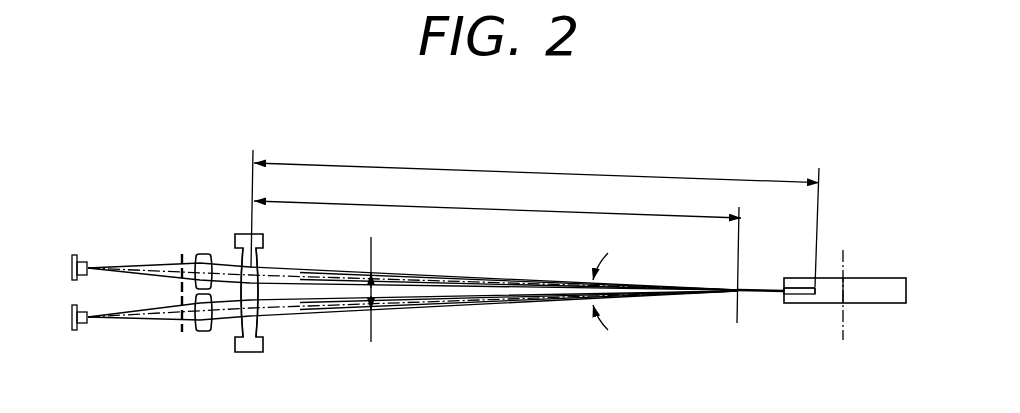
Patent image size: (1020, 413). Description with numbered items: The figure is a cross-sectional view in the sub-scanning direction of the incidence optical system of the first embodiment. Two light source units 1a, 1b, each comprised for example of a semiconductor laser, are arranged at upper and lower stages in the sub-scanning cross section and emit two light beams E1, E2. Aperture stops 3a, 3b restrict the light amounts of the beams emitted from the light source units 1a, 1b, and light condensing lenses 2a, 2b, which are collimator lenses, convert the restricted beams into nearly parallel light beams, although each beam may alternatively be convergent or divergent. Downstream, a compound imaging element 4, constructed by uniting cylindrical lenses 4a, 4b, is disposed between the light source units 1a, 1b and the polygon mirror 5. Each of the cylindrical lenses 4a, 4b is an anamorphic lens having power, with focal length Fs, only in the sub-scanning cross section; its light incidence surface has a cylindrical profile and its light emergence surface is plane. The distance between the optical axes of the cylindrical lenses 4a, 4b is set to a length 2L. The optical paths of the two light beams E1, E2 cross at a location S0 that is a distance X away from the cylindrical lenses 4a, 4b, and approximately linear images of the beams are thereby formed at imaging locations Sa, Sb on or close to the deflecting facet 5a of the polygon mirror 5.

The light source unit 1a is at (74, 256).
The light source unit 1b is at (73, 331).
The light condensing lens (collimator lens) 2a is at (203, 253).
The light condensing lens (collimator lens) 2b is at (203, 331).
The aperture stop 3a is at (180, 257).
The aperture stop 3b is at (180, 328).
The compound imaging element 4 is at (267, 255).
The cylindrical lens 4a is at (258, 268).
The cylindrical lens 4b is at (253, 315).
The polygon mirror 5 is at (822, 296).
The deflecting facet 5a is at (784, 301).
The light beam E1 is at (462, 280).
The light beam E2 is at (448, 303).
The crossing location S0 is at (737, 292).
The imaging location Sa is at (812, 303).
The imaging location Sb is at (805, 286).
The focal length Fs is at (535, 216).
The distance X is at (497, 202).
The distance between optical axes 2L is at (386, 289).